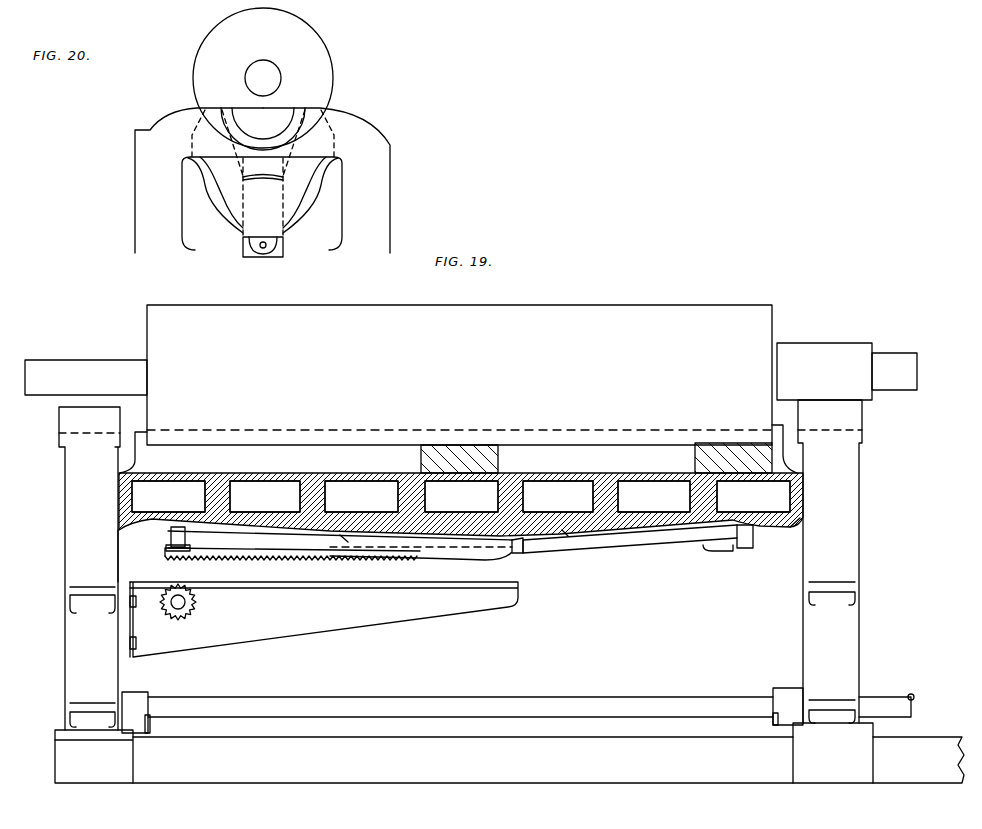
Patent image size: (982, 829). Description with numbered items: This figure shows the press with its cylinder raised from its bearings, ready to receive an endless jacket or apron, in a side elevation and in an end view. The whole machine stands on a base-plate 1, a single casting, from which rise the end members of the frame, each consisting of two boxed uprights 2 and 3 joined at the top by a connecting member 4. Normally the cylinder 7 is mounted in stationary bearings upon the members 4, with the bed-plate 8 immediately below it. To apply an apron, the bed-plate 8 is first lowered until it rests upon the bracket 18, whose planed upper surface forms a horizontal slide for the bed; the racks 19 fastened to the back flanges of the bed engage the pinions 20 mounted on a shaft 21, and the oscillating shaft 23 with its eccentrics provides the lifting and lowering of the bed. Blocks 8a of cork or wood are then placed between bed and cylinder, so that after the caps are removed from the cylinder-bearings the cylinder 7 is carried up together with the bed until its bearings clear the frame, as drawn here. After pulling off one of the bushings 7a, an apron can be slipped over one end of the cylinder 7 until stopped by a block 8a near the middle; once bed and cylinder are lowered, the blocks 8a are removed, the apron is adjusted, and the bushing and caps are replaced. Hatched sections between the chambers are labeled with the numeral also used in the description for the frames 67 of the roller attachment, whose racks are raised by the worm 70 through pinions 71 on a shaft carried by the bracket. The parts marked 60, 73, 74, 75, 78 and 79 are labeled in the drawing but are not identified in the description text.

In FIG. 19, the base-plate 1 is at (509, 753).
In FIG. 20, the boxed upright 2 is at (238, 180).
In FIG. 20, the boxed upright 3 is at (326, 180).
In FIG. 19, the boxed upright 3 is at (460, 565).
In FIG. 20, the connecting member 4 is at (263, 172).
In FIG. 20, the cylinder 7 is at (263, 78).
In FIG. 19, the cylinder 7 is at (398, 375).
In FIG. 19, the bushing 7a is at (847, 371).
In FIG. 20, the bed-plate 8 is at (300, 200).
In FIG. 19, the bed-plate 8 is at (461, 480).
In FIG. 20, the blocks 8a is at (262, 207).
In FIG. 19, the blocks 8a is at (685, 462).
In FIG. 19, the bracket 18 is at (324, 619).
In FIG. 19, the rack 19 is at (228, 556).
In FIG. 19, the pinion 20 is at (196, 600).
In FIG. 19, the shaft 21 is at (181, 608).
In FIG. 19, the oscillating shaft 23 is at (518, 710).
In FIG. 19, the joint 60 is at (523, 545).
In FIG. 19, the frame 67 is at (690, 498).
In FIG. 19, the worm 70 is at (120, 538).
In FIG. 19, the pinion 71 is at (185, 552).
In FIG. 19, the bolt 73 is at (728, 549).
In FIG. 19, the link bar 74 is at (485, 545).
In FIG. 19, the tie bar 75 is at (625, 530).
In FIG. 19, the slot 78 is at (580, 565).
In FIG. 19, the lug 79 is at (797, 526).